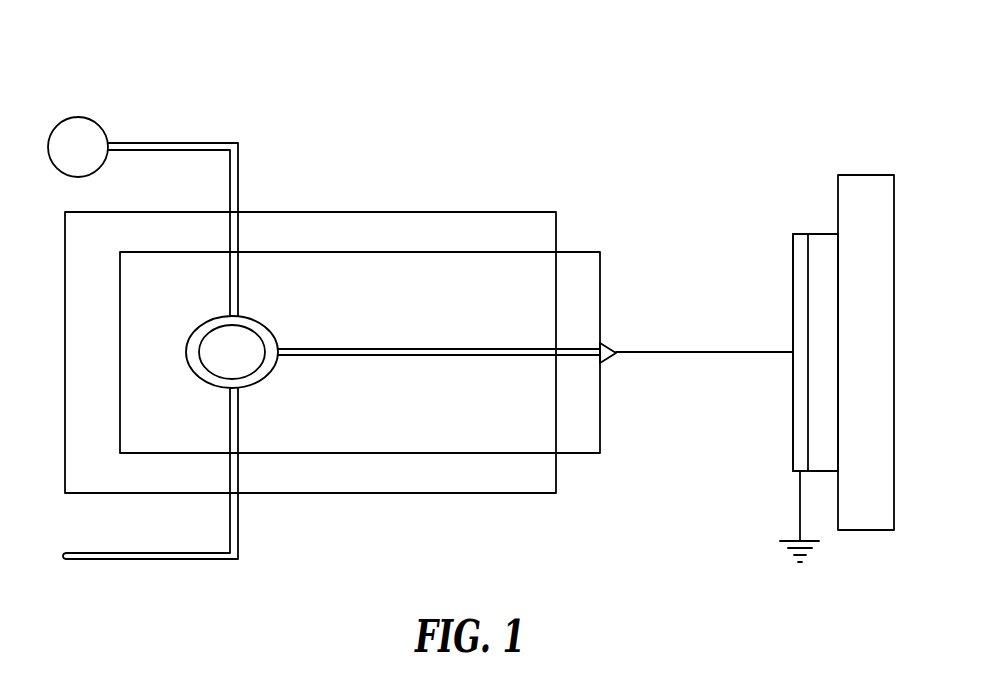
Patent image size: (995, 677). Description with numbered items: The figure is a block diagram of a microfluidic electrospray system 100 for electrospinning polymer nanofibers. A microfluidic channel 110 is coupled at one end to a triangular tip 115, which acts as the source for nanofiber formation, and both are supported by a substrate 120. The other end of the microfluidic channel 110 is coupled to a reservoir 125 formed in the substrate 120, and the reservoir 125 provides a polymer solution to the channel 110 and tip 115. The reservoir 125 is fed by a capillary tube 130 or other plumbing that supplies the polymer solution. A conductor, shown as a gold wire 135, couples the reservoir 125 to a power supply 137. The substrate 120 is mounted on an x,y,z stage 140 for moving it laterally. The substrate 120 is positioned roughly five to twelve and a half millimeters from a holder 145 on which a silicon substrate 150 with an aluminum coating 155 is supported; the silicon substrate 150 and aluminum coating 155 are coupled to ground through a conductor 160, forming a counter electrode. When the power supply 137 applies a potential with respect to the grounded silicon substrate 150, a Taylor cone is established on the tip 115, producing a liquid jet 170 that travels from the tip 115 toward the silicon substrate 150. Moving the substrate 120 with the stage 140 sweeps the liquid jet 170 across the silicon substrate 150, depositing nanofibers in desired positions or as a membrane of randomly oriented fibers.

The microfluidic electrospray system 100 is at (760, 63).
The microfluidic channel 110 is at (438, 348).
The triangular tip 115 is at (613, 358).
The substrate 120 is at (601, 288).
The reservoir 125 is at (263, 322).
The capillary tube 130 is at (150, 560).
The gold wire 135 is at (172, 142).
The power supply 137 is at (76, 116).
The x,y,z stage 140 is at (396, 210).
The holder 145 is at (866, 174).
The silicon substrate 150 is at (826, 233).
The aluminum coating 155 is at (792, 423).
The conductor 160 is at (799, 505).
The liquid jet 170 is at (705, 350).